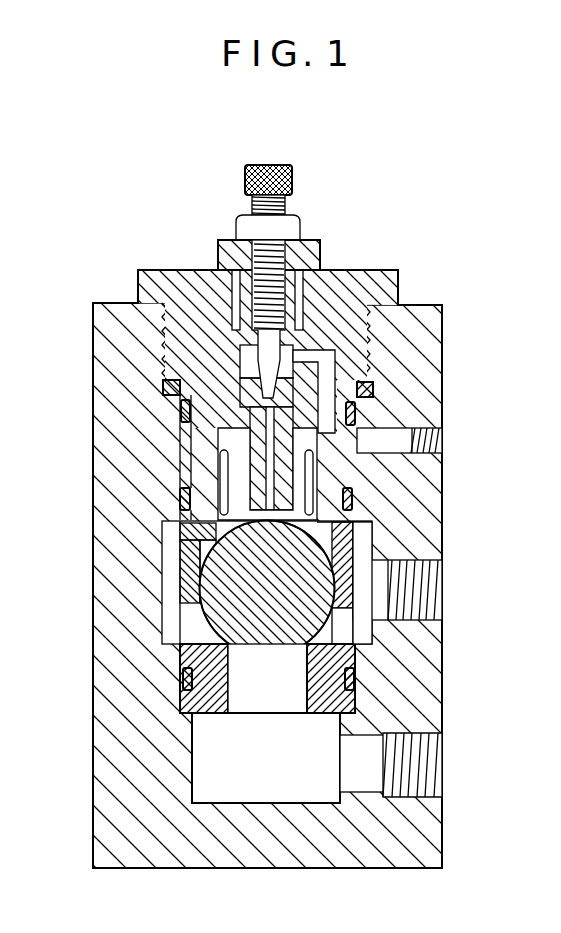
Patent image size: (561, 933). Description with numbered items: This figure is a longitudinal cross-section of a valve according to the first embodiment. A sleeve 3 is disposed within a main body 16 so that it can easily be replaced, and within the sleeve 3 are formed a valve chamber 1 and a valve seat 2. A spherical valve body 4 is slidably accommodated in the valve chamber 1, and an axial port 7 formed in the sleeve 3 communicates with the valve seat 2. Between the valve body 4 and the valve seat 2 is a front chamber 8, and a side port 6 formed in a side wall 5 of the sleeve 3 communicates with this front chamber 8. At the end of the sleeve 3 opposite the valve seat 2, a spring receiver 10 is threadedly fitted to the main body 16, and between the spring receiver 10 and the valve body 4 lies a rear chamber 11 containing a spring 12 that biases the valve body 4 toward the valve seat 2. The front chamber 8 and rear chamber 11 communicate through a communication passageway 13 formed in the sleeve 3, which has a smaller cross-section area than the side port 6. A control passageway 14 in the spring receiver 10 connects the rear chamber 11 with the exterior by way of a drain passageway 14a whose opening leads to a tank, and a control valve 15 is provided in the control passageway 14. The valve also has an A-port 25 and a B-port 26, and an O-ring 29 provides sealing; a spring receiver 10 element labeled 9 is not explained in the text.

The valve chamber 1 is at (330, 548).
The valve seat 2 is at (182, 652).
The sleeve 3 is at (195, 600).
The valve body 4 is at (185, 562).
The side wall 5 is at (320, 546).
The side port 6 is at (348, 628).
The axial port 7 is at (305, 714).
The front chamber 8 is at (345, 665).
The sealing ring 9 is at (182, 500).
The spring receiver 10 is at (150, 270).
The rear chamber 11 is at (224, 472).
The spring 12 is at (265, 462).
The communication passageway 13 is at (190, 532).
The control passageway 14 is at (180, 398).
The drain passageway 14a is at (335, 355).
The control valve 15 is at (282, 165).
The main body 16 is at (95, 752).
The A-port 25 is at (443, 588).
The B-port 26 is at (442, 792).
The O-ring 29 is at (372, 388).